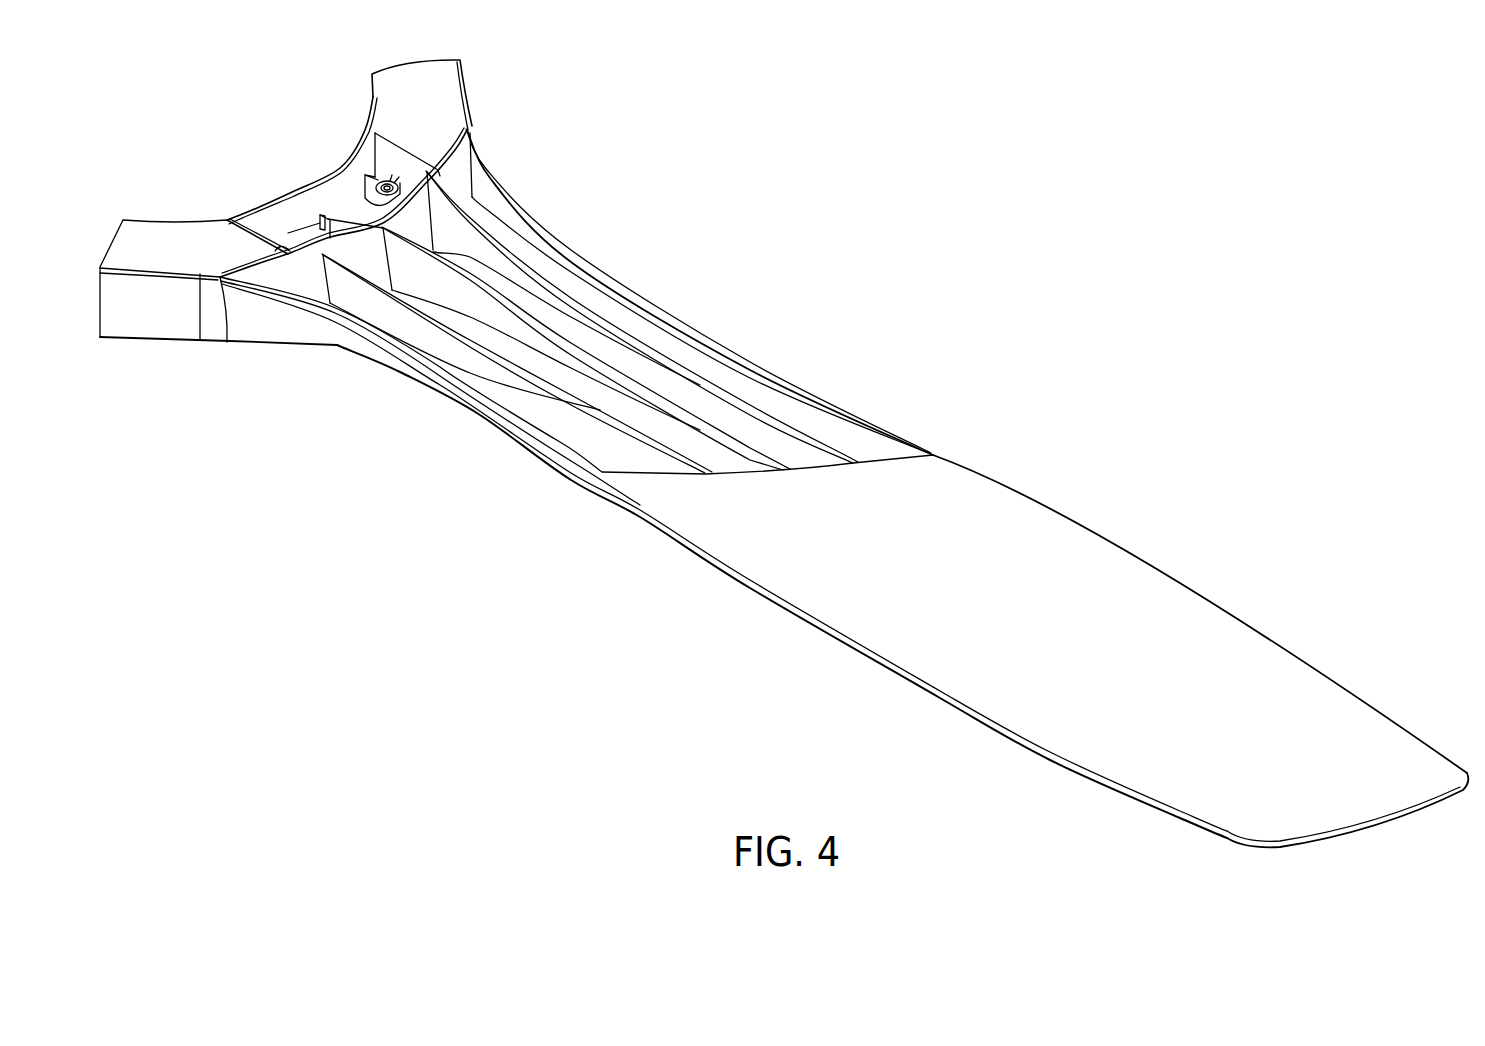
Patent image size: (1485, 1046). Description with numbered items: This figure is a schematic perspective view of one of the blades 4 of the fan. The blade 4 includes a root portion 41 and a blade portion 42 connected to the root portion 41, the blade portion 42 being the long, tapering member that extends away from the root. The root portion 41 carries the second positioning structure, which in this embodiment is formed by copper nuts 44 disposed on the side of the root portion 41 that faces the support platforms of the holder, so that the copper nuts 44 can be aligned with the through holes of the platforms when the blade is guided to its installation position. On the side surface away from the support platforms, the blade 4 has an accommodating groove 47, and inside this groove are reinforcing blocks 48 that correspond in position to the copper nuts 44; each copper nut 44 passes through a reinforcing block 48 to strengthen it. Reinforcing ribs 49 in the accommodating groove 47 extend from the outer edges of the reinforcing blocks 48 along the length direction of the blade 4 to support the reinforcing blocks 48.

The blade 4 is at (733, 291).
The root portion 41 is at (435, 107).
The blade portion 42 is at (958, 493).
The copper nut 44 is at (400, 183).
The accommodating groove 47 is at (292, 231).
The reinforcing block 48 is at (377, 204).
The reinforcing rib 49 is at (365, 187).